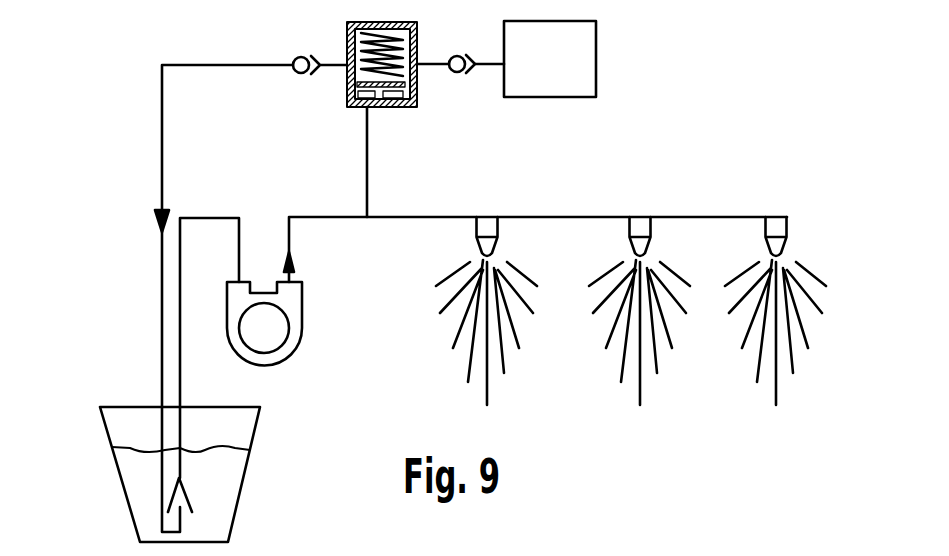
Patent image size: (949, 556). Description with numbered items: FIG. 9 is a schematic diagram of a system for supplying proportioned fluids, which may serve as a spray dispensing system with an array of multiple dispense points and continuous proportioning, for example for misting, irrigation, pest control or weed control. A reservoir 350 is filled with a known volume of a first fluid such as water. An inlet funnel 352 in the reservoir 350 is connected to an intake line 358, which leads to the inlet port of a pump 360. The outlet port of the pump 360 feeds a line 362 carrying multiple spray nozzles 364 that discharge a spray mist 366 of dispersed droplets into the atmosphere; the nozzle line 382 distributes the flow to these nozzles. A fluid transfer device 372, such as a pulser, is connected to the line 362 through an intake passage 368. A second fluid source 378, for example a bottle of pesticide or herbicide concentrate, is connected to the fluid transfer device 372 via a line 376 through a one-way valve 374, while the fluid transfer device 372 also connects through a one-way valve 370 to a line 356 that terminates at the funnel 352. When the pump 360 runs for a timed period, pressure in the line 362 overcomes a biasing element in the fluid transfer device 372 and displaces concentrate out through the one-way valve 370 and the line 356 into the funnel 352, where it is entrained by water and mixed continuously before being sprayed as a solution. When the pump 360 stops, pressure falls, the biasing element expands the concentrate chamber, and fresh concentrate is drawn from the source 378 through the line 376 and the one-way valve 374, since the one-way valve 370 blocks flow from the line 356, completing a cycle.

The reservoir 350 is at (112, 447).
The inlet funnel 352 is at (192, 503).
The line 356 is at (158, 490).
The intake line 358 is at (182, 393).
The pump 360 is at (297, 348).
The line 362 is at (317, 218).
The spray nozzles 364 is at (476, 232).
The spray mist 366 is at (505, 373).
The intake passage 368 is at (370, 163).
The one-way valve 370 is at (300, 57).
The fluid transfer device 372 is at (320, 110).
The one-way valve 374 is at (457, 72).
The line 376 is at (490, 65).
The second fluid source 378 is at (596, 64).
The manifold 382 is at (685, 217).